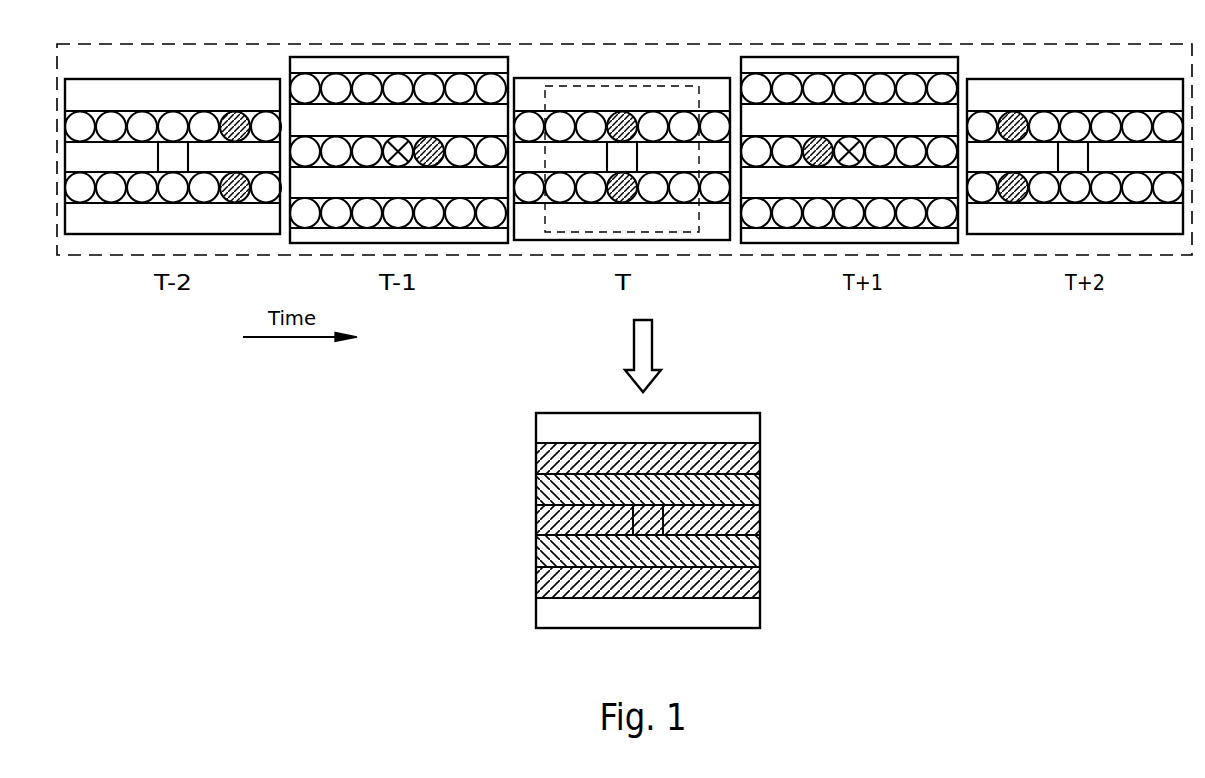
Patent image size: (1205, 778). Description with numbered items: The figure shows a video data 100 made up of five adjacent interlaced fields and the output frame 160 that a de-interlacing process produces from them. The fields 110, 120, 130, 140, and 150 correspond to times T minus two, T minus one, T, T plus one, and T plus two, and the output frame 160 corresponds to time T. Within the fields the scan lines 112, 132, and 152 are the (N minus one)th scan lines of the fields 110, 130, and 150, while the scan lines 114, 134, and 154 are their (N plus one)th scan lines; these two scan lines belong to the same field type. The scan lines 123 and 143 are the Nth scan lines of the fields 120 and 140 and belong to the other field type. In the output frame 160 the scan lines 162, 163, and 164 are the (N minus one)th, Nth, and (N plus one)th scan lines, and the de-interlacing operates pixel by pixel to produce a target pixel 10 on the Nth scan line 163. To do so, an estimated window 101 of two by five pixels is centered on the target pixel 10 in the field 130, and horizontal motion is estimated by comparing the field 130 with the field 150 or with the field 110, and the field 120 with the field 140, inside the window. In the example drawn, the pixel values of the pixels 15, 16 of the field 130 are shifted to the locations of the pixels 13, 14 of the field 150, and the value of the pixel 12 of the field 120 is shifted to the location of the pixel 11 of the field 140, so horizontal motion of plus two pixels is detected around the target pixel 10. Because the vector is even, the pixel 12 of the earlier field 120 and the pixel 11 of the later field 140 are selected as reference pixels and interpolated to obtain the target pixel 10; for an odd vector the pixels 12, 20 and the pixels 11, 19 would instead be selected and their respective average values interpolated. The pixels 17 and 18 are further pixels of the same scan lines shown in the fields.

The target pixel 10 is at (189, 163).
The pixel 11 is at (368, 137).
The pixel 12 is at (430, 137).
The pixel 13 is at (110, 139).
The pixel 14 is at (110, 201).
The pixel 15 is at (174, 116).
The pixel 16 is at (173, 201).
The adjacent cell 17 is at (235, 116).
The adjacent cell 18 is at (235, 201).
The pixel 19 is at (337, 137).
The pixel 20 is at (461, 137).
The video data 100 is at (770, 256).
The estimated window 101 is at (575, 86).
The field 110 is at (170, 79).
The scan line 112 is at (92, 111).
The scan line 114 is at (93, 205).
The field 120 is at (395, 57).
The scan line 123 is at (367, 168).
The field 130 is at (620, 78).
The scan line 132 is at (531, 111).
The scan line 134 is at (533, 205).
The field 140 is at (845, 57).
The scan line 143 is at (818, 168).
The field 150 is at (1072, 79).
The scan line 152 is at (986, 111).
The scan line 154 is at (988, 205).
The output frame 160 is at (729, 413).
The scan line 162 is at (545, 495).
The scan line 163 is at (545, 524).
The scan line 164 is at (545, 554).